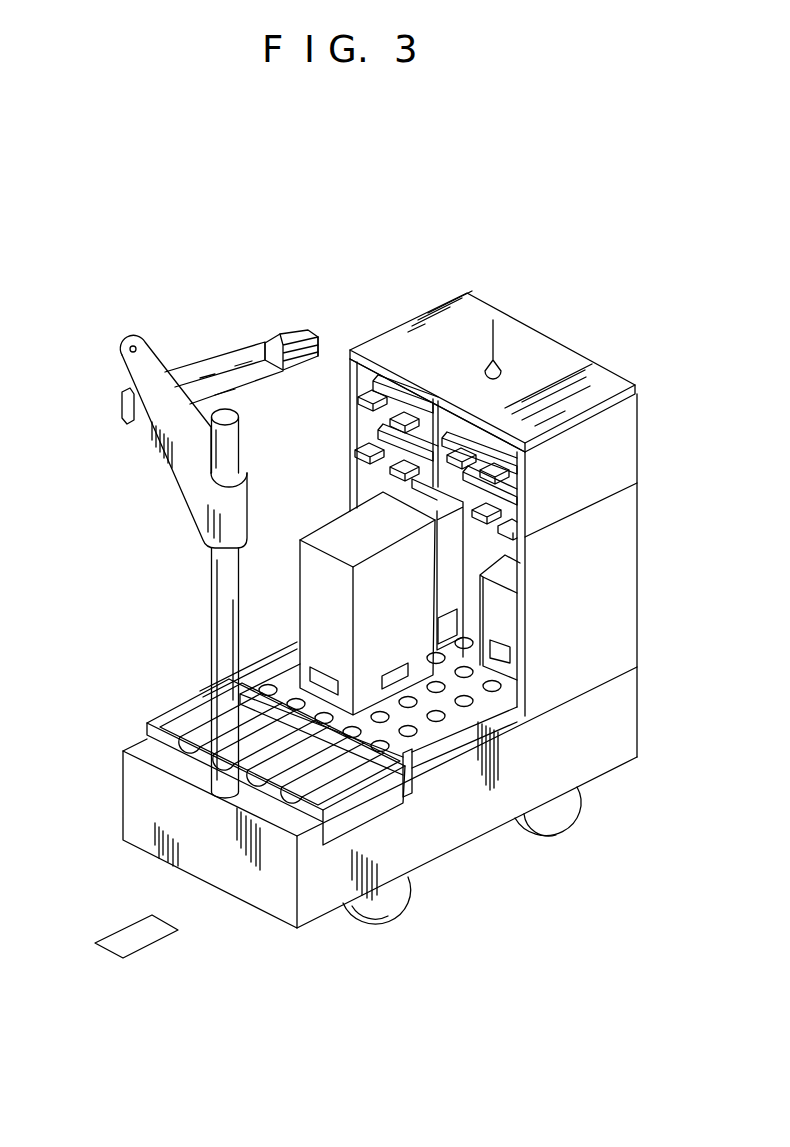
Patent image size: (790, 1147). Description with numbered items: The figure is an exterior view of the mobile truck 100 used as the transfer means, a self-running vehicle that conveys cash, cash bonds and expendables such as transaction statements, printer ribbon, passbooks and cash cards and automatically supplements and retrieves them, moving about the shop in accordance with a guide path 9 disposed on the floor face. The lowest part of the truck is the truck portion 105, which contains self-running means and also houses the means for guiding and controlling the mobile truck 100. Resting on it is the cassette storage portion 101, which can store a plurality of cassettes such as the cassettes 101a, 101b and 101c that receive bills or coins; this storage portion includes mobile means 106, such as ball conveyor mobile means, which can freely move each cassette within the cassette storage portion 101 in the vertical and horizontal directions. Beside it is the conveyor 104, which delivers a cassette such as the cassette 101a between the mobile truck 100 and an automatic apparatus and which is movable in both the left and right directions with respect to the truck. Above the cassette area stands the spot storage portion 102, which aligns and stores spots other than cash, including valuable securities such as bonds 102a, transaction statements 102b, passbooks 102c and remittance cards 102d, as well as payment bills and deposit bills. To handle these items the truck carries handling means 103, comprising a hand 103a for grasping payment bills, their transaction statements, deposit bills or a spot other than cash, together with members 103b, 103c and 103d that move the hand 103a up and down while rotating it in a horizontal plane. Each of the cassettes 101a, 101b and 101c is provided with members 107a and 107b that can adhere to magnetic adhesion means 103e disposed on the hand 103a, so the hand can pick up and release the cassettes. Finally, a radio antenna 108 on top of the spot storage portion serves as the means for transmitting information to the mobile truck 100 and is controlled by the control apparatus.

The mobile truck 100 is at (640, 523).
The spot storage portion 102 is at (603, 417).
The bonds 102a is at (357, 418).
The transaction statements 102b is at (523, 520).
The passbooks 102c is at (405, 395).
The remittance cards 102d is at (525, 455).
The radio antenna 108 is at (495, 358).
The cassette storage portion 101 is at (442, 730).
The cassette 101a is at (317, 537).
The cassette 101b is at (452, 543).
The cassette 101c is at (503, 623).
The member 107a is at (398, 665).
The member 107b is at (212, 660).
The handling means 103 is at (197, 501).
The hand 103a is at (277, 337).
The member 103b is at (200, 360).
The member 103c is at (145, 462).
The member 103d is at (213, 605).
The magnetic adhesion means 103e is at (318, 343).
The conveyor 104 is at (190, 707).
The truck portion 105 is at (133, 792).
The mobile means 106 is at (385, 768).
The guide path 9 is at (157, 942).